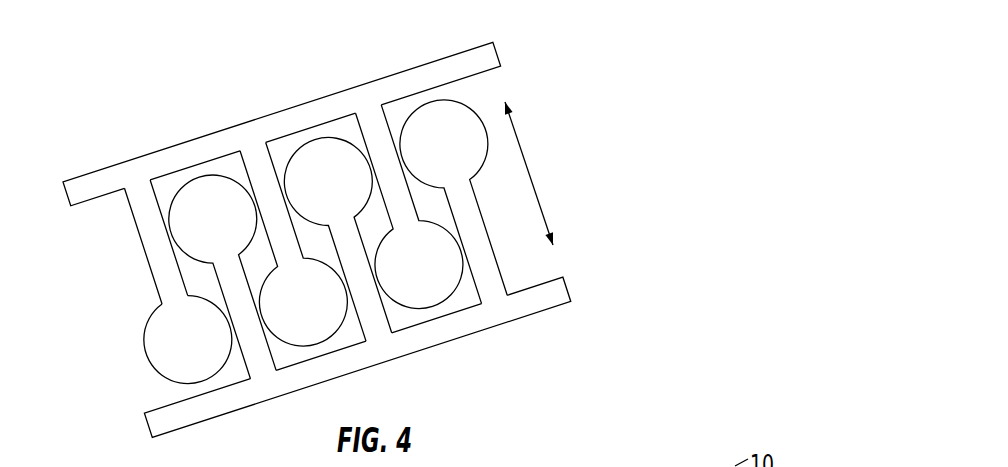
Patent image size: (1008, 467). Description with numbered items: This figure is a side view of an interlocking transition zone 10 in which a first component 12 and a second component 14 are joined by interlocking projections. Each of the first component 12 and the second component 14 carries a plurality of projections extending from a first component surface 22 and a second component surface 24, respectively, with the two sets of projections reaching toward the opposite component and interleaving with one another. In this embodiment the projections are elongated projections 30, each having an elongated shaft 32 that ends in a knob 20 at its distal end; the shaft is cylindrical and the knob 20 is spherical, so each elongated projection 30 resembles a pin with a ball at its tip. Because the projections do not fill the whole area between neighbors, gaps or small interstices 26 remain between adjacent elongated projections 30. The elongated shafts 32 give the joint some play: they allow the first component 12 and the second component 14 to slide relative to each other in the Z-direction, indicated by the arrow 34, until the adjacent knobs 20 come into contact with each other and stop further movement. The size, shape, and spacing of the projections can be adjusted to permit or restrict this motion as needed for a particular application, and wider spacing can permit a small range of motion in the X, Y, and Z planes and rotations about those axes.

The interlocking transition zone 10 is at (636, 53).
The first component 12 is at (427, 335).
The second component 14 is at (252, 141).
The knob 20 is at (188, 340).
The first component surface 22 is at (550, 278).
The second component surface 24 is at (478, 80).
The interstices 26 is at (342, 135).
The elongated projections 30 is at (140, 321).
The elongated shafts 32 is at (157, 242).
The arrow 34 is at (537, 190).